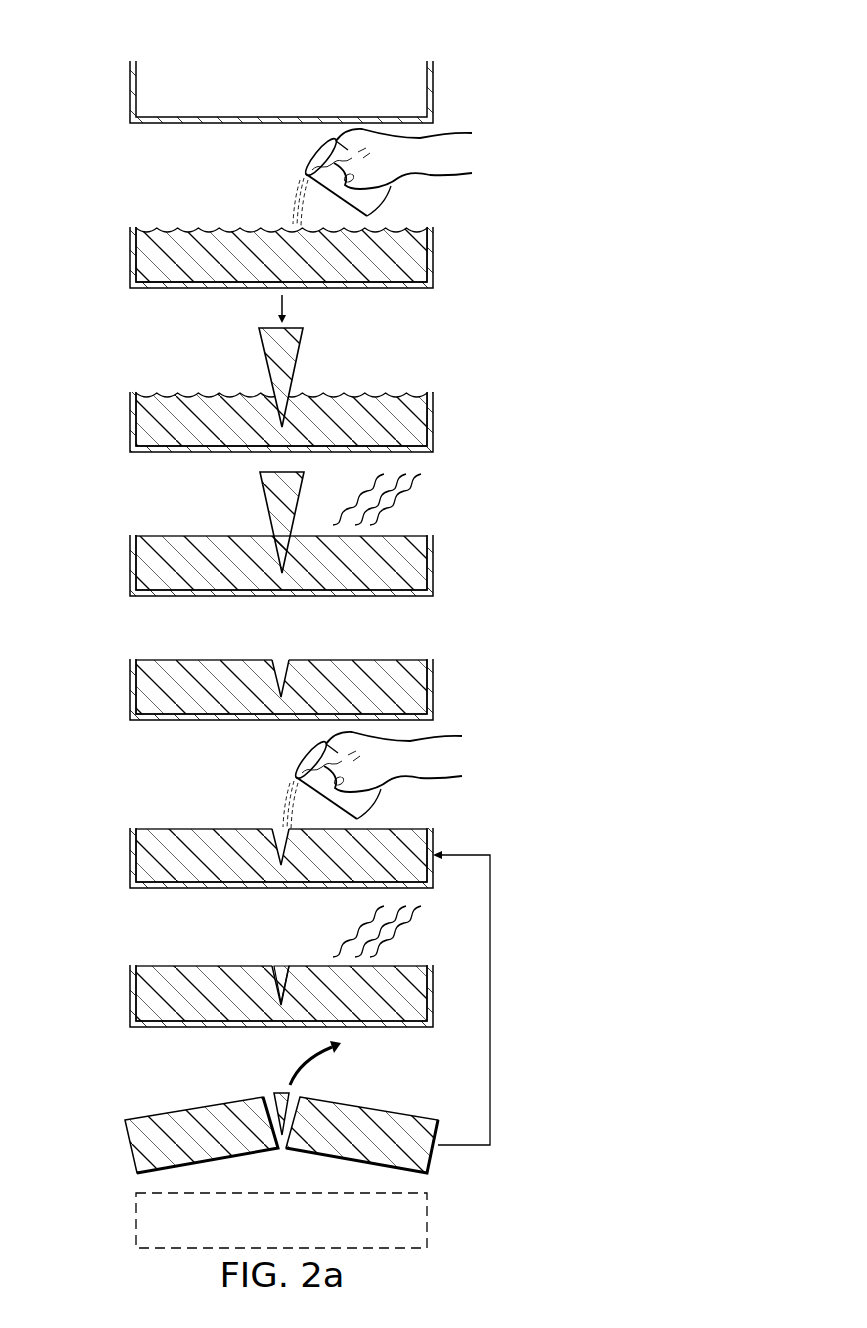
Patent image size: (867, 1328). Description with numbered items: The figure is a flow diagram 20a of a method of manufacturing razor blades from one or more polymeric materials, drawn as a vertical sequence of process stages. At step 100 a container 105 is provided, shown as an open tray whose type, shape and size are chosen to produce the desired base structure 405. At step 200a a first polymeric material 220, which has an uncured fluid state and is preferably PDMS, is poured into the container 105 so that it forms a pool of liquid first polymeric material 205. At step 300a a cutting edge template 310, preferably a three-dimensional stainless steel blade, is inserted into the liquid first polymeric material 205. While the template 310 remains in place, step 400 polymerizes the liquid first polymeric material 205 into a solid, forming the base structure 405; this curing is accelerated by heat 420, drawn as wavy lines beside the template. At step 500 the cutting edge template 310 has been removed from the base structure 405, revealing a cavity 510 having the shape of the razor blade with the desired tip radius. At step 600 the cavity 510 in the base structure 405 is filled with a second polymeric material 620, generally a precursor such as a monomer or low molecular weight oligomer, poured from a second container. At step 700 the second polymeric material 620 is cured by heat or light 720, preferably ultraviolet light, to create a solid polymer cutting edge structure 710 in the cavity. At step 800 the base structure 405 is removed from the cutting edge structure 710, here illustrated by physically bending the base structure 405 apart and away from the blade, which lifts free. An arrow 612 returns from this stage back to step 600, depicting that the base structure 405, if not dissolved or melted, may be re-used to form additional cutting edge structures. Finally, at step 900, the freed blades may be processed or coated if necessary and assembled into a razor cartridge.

The flow diagram 20a is at (383, 50).
The step of providing a container 100 is at (122, 87).
The container 105 is at (181, 72).
The step of dispensing first polymeric material 200a is at (122, 251).
The liquid first polymeric material 205 is at (194, 242).
The first polymeric material 220 is at (295, 194).
The step of inserting cutting edge template 300a is at (122, 417).
The cutting edge template 310 is at (299, 358).
The step of polymerizing first polymeric material 400 is at (122, 559).
The base structure 405 is at (184, 540).
The heat 420 is at (408, 492).
The step of removing cutting edge template 500 is at (122, 689).
The cavity 510 is at (277, 664).
The step of filling cavity 600 is at (122, 860).
The second polymeric material 620 is at (283, 797).
The arrow 612 is at (490, 1000).
The step of curing second polymeric material 700 is at (122, 994).
The cutting edge structure 710 is at (283, 968).
The heat or light 720 is at (408, 922).
The step of removing base structure 800 is at (120, 1146).
The step of assembling razor cartridge 900 is at (126, 1222).